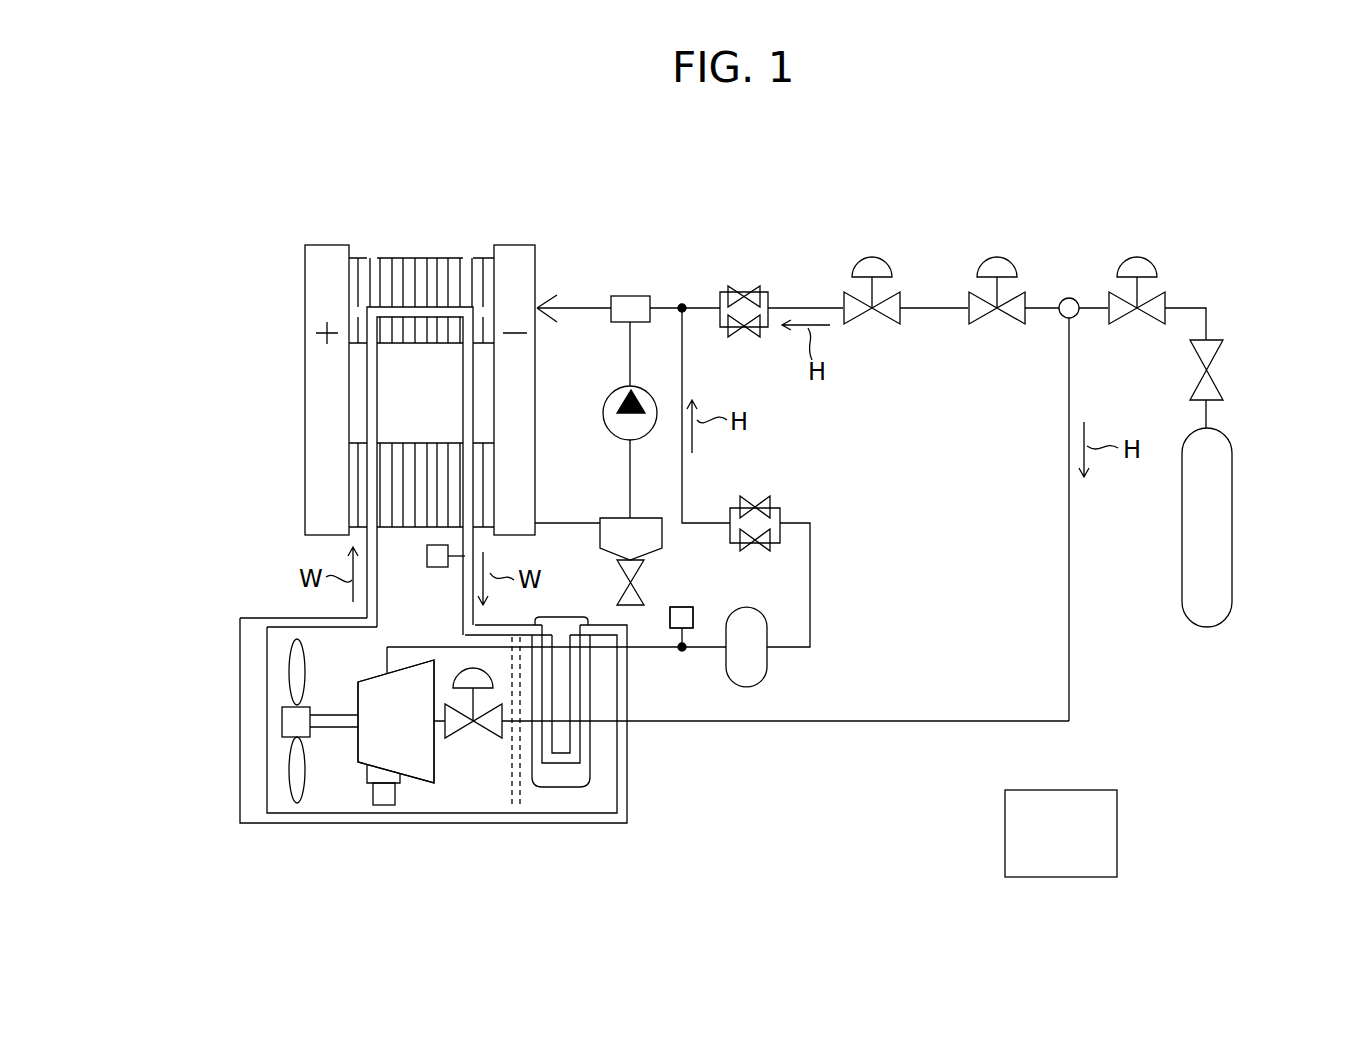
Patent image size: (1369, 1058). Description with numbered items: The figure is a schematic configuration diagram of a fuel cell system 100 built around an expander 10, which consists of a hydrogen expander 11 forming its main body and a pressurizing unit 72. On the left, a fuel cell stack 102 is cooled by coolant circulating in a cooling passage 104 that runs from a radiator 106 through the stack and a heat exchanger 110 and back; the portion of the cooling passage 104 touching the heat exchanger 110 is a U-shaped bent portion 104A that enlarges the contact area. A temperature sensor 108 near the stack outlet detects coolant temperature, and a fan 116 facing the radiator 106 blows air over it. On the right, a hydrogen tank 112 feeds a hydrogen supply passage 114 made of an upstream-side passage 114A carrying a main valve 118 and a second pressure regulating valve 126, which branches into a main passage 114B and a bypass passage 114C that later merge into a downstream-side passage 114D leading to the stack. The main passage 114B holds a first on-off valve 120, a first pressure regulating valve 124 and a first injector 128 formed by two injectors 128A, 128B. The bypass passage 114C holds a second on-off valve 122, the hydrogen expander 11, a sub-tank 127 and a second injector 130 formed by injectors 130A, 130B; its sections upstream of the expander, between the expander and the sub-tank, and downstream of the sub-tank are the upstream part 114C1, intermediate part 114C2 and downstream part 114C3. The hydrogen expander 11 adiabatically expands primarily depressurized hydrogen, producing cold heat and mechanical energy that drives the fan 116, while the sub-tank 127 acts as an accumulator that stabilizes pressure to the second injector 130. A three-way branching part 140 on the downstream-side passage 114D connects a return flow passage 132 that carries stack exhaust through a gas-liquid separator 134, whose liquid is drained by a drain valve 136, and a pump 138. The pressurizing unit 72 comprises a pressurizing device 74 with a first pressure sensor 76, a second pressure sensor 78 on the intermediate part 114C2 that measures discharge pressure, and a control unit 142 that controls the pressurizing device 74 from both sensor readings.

The fuel cell system 100 is at (856, 187).
The fuel cell stack 102 is at (305, 283).
The cooling passage 104 is at (482, 833).
The bent portion 104A is at (563, 763).
The radiator 106 is at (240, 712).
The temperature sensor 108 is at (440, 568).
The heat exchanger 110 is at (550, 615).
The hydrogen expander 11 is at (345, 745).
The expander 10 is at (353, 779).
The hydrogen tank 112 is at (1233, 512).
The hydrogen supply passage 114 is at (1109, 685).
The upstream-side passage 114A is at (1199, 305).
The main passage 114B is at (935, 305).
The bypass passage 114C is at (942, 736).
The upstream part 114C1 is at (785, 722).
The intermediate part 114C2 is at (660, 650).
The downstream part 114C3 is at (812, 568).
The downstream-side passage 114D is at (580, 305).
The fan 116 is at (303, 680).
The main valve 118 is at (1220, 355).
The first on-off valve 120 is at (985, 318).
The second on-off valve 122 is at (465, 730).
The first pressure regulating valve 124 is at (878, 318).
The second pressure regulating valve 126 is at (1128, 318).
The sub-tank 127 is at (770, 668).
The first injector 128 is at (789, 262).
The injector 128A is at (736, 290).
The injector 128B is at (744, 330).
The second injector 130 is at (813, 492).
The injector 130A is at (752, 497).
The injector 130B is at (750, 552).
The return flow passage 132 is at (628, 452).
The gas-liquid separator 134 is at (600, 517).
The drain valve 136 is at (617, 572).
The pump 138 is at (610, 393).
The three-way branching part 140 is at (633, 296).
The control unit 142 is at (1118, 832).
The pressurizing unit 72 is at (689, 595).
The pressurizing device 74 is at (370, 765).
The first pressure sensor 76 is at (390, 805).
The second pressure sensor 78 is at (683, 607).